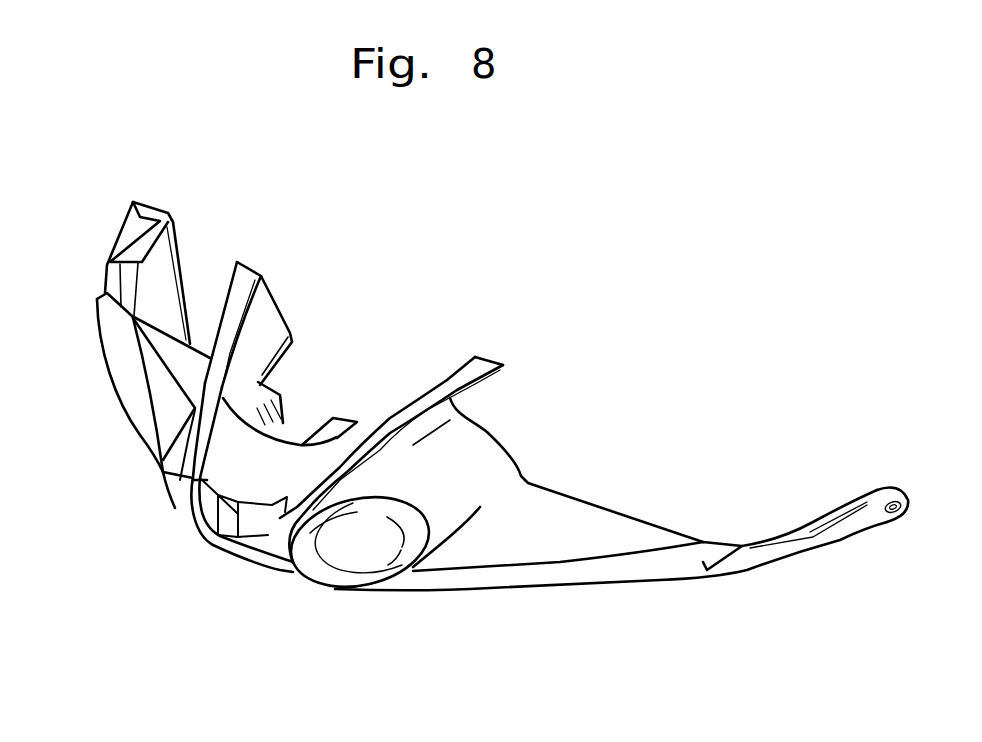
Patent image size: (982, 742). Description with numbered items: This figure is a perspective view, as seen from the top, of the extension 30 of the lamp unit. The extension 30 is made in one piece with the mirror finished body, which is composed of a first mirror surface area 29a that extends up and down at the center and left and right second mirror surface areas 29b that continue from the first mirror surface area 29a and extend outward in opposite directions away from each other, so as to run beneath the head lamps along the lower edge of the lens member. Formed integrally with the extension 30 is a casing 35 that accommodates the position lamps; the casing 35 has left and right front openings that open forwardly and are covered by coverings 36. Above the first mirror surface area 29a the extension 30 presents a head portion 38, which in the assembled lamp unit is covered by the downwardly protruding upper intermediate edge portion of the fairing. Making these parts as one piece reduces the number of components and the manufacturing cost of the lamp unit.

The extension 30 is at (517, 355).
The casing 35 is at (487, 468).
The head portion 38 is at (265, 457).
The coverings 36 is at (363, 550).
The first mirror surface area 29a is at (252, 567).
The second mirror surface areas 29b is at (123, 413).